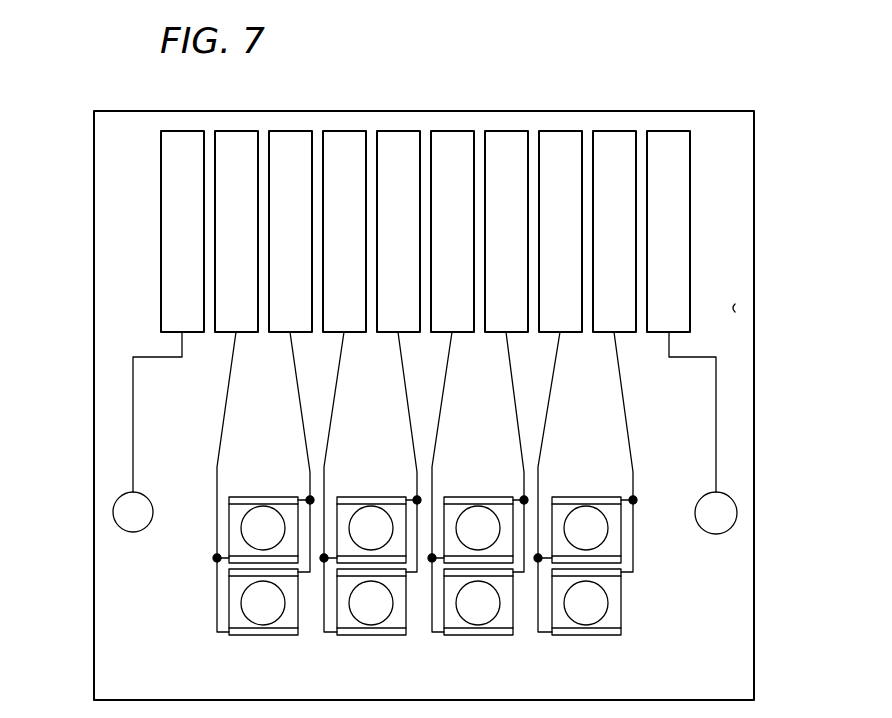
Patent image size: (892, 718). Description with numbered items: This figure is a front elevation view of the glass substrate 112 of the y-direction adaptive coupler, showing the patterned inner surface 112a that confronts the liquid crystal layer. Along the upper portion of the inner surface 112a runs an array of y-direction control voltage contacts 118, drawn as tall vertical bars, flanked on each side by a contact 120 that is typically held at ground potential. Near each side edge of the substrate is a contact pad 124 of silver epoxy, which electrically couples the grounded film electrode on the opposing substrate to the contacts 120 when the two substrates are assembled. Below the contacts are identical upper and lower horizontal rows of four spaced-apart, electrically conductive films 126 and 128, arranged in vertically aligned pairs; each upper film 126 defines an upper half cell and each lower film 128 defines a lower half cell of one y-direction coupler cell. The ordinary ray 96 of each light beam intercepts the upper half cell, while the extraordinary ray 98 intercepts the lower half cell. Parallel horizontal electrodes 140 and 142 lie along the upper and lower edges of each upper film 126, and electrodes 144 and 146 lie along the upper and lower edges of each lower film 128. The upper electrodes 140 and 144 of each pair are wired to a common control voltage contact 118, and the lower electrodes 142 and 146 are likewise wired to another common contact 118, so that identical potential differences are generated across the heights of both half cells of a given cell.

The glass substrate 112 is at (756, 410).
The inner surface 112a is at (737, 310).
The y-direction control voltage contacts 118 is at (398, 130).
The contacts 120 is at (161, 207).
The contact pad 124 is at (113, 512).
The upper electrically conductive films 126 is at (229, 517).
The lower electrically conductive films 128 is at (230, 608).
The upper electrode of upper half cell film 140 is at (255, 496).
The ordinary ray 96 is at (278, 513).
The extraordinary ray 98 is at (257, 623).
The lower electrode of upper half cell film 142 is at (238, 553).
The upper electrode of lower half cell film 144 is at (237, 579).
The lower electrode of lower half cell film 146 is at (273, 635).